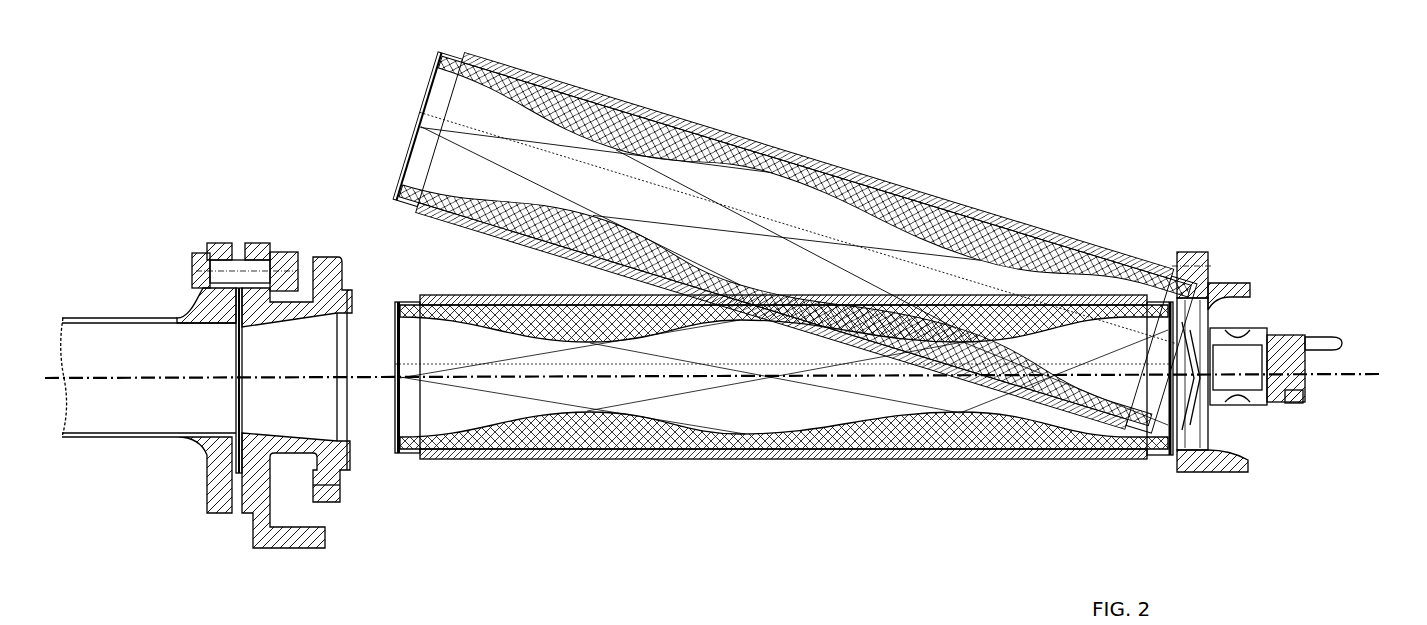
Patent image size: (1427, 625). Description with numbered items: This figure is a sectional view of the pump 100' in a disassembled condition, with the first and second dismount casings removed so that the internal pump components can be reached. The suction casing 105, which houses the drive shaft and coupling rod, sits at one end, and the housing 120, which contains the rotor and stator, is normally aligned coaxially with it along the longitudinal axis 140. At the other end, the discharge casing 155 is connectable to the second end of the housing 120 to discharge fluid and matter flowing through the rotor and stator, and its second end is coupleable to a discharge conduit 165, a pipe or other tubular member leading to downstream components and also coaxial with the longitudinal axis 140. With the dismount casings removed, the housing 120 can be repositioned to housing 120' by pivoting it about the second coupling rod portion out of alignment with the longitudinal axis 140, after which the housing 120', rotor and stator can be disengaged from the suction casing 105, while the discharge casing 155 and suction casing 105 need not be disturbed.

The pump 100' is at (724, 288).
The suction casing 105 is at (1210, 240).
The housing 120 is at (784, 415).
The housing 120' is at (795, 241).
The longitudinal axis 140 is at (1358, 372).
The discharge casing 155 is at (253, 228).
The discharge conduit 165 is at (95, 247).